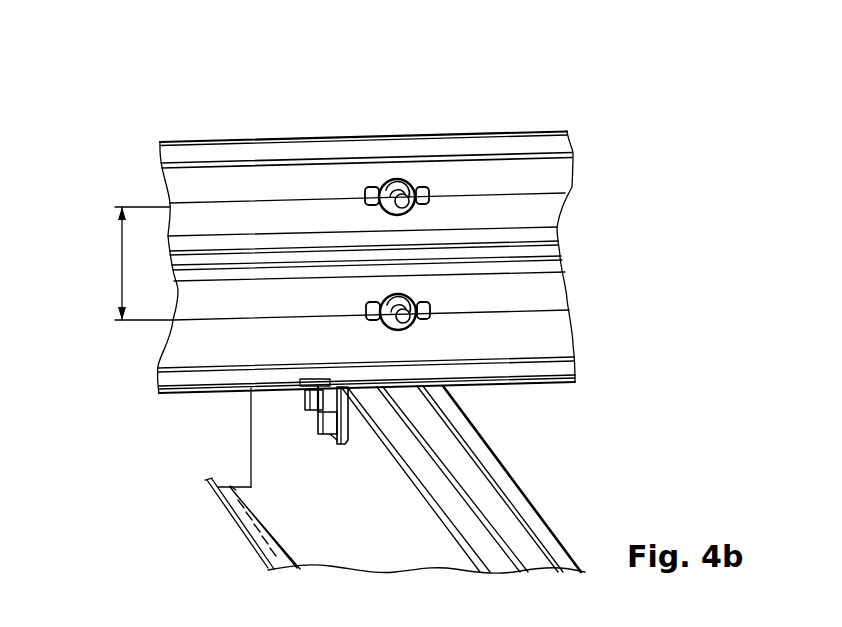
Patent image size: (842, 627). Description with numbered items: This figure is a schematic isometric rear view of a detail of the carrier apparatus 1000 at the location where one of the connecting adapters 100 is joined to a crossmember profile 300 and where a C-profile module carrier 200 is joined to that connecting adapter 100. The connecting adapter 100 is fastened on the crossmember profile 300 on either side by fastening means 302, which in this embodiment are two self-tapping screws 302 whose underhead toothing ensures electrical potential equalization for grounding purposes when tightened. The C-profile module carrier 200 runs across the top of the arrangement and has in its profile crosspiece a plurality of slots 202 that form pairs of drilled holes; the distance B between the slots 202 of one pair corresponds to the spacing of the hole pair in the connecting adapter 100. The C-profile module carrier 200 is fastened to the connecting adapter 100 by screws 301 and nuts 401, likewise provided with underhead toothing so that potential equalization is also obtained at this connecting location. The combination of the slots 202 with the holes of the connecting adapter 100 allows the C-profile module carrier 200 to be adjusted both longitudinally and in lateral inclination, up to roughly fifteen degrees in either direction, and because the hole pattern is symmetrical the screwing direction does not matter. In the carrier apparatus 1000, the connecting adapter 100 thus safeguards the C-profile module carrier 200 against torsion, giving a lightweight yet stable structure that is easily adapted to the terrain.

The carrier apparatus 1000 is at (522, 72).
The C-profile module carrier 200 is at (264, 122).
The screw 301 is at (395, 178).
The nut 401 is at (381, 179).
The slot 202 is at (422, 180).
The connecting adapter 100 is at (300, 398).
The fastening means 302 is at (300, 424).
The crossmember profile 300 is at (556, 496).
The distance between slots B is at (118, 268).